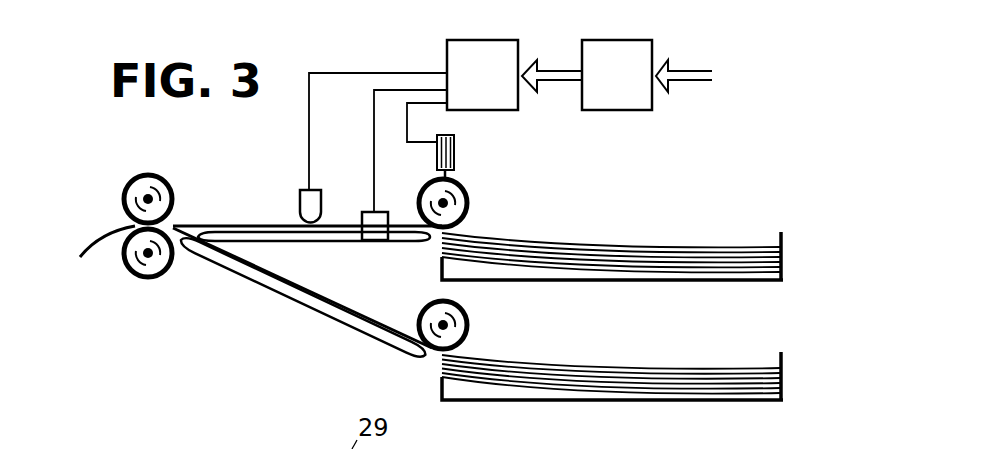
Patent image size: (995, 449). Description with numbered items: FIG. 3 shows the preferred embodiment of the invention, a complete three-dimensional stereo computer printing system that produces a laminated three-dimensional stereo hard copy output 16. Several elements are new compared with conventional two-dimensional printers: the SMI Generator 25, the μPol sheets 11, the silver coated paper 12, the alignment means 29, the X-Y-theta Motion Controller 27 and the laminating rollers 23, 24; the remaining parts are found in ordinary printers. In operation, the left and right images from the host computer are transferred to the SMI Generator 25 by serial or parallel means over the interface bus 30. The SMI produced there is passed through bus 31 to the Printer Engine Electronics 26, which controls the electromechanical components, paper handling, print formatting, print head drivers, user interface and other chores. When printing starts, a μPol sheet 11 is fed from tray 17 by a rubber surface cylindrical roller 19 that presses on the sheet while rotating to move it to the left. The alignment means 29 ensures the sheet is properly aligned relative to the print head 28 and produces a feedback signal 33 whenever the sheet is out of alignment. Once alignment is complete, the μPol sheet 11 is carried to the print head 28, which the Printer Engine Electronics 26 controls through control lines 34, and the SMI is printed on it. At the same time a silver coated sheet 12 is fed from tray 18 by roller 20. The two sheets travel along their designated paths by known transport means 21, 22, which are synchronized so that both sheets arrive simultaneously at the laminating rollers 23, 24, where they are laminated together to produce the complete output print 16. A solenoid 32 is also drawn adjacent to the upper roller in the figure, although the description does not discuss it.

The μPol sheet 11 is at (577, 240).
The silver coated sheet 12 is at (598, 358).
The 3-D stereo hard copy output 16 is at (85, 245).
The tray 17 is at (692, 280).
The tray 18 is at (572, 402).
The rubber surface cylindrical roller 19 is at (470, 198).
The roller 20 is at (465, 308).
The transport means 21 is at (300, 307).
The transport means 22 is at (295, 242).
The laminating roller 23 is at (145, 172).
The laminating roller 24 is at (132, 272).
The SMI Generator 25 is at (626, 84).
The Printer Engine Electronics 26 is at (489, 84).
The X-Y-theta Motion Controller 27 is at (423, 147).
The print head 28 is at (300, 205).
The alignment means 29 is at (362, 210).
The interface bus 30 is at (695, 68).
The bus 31 is at (552, 72).
The solenoid 32 is at (455, 152).
The feedback signal 33 is at (374, 142).
The control lines 34 is at (309, 137).